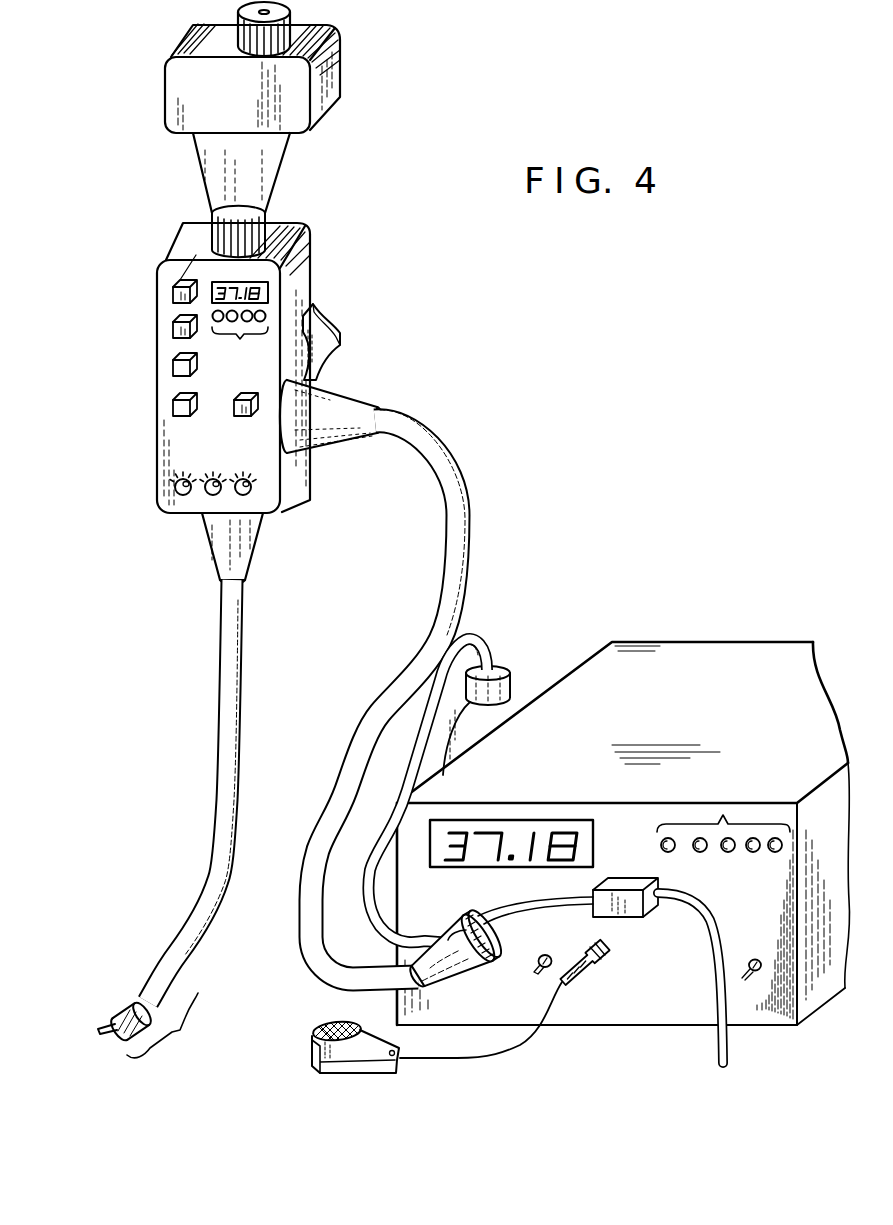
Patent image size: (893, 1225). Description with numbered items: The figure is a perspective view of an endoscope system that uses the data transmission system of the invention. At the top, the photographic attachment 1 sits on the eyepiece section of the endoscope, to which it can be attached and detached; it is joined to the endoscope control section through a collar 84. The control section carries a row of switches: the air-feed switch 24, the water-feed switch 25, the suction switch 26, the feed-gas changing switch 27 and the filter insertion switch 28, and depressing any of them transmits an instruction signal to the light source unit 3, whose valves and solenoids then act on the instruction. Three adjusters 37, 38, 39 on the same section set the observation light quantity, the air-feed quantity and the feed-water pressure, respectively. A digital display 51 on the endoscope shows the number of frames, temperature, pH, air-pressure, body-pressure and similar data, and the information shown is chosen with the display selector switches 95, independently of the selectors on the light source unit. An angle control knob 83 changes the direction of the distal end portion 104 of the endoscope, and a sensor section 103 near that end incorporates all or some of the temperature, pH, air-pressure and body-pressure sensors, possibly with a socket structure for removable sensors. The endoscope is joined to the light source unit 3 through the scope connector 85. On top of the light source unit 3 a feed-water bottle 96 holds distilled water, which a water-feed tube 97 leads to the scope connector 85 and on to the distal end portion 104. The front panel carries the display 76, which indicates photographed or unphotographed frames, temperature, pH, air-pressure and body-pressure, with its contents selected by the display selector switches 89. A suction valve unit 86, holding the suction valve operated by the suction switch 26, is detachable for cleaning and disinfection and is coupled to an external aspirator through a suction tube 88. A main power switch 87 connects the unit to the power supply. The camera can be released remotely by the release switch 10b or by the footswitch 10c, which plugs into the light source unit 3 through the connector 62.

The photographic attachment 1 is at (333, 96).
The reservoir connector collar 84 is at (266, 216).
The digital display 51 is at (268, 284).
The angle control knob 83 is at (315, 306).
The air-feed switch 24 is at (173, 294).
The water-feed switch 25 is at (173, 329).
The suction switch 26 is at (173, 368).
The feed-gas changing switch 27 is at (173, 408).
The filter insertion switch 28 is at (238, 416).
The display selector switches 95 is at (240, 338).
The adjuster 37 is at (175, 489).
The adjuster 38 is at (210, 495).
The adjuster 39 is at (247, 494).
The light source unit 3 is at (652, 660).
The display 76 is at (492, 821).
The display selector switches 89 is at (723, 816).
The feed-water bottle 96 is at (512, 696).
The water-feed tube 97 is at (485, 645).
The scope connector 85 is at (452, 930).
The suction valve unit 86 is at (638, 917).
The suction tube 88 is at (693, 905).
The main power switch 87 is at (752, 961).
The connector 62 is at (588, 975).
The release switch 10b is at (537, 968).
The footswitch 10c is at (313, 1063).
The sensor section 103 is at (110, 1008).
The distal end portion 104 is at (182, 819).